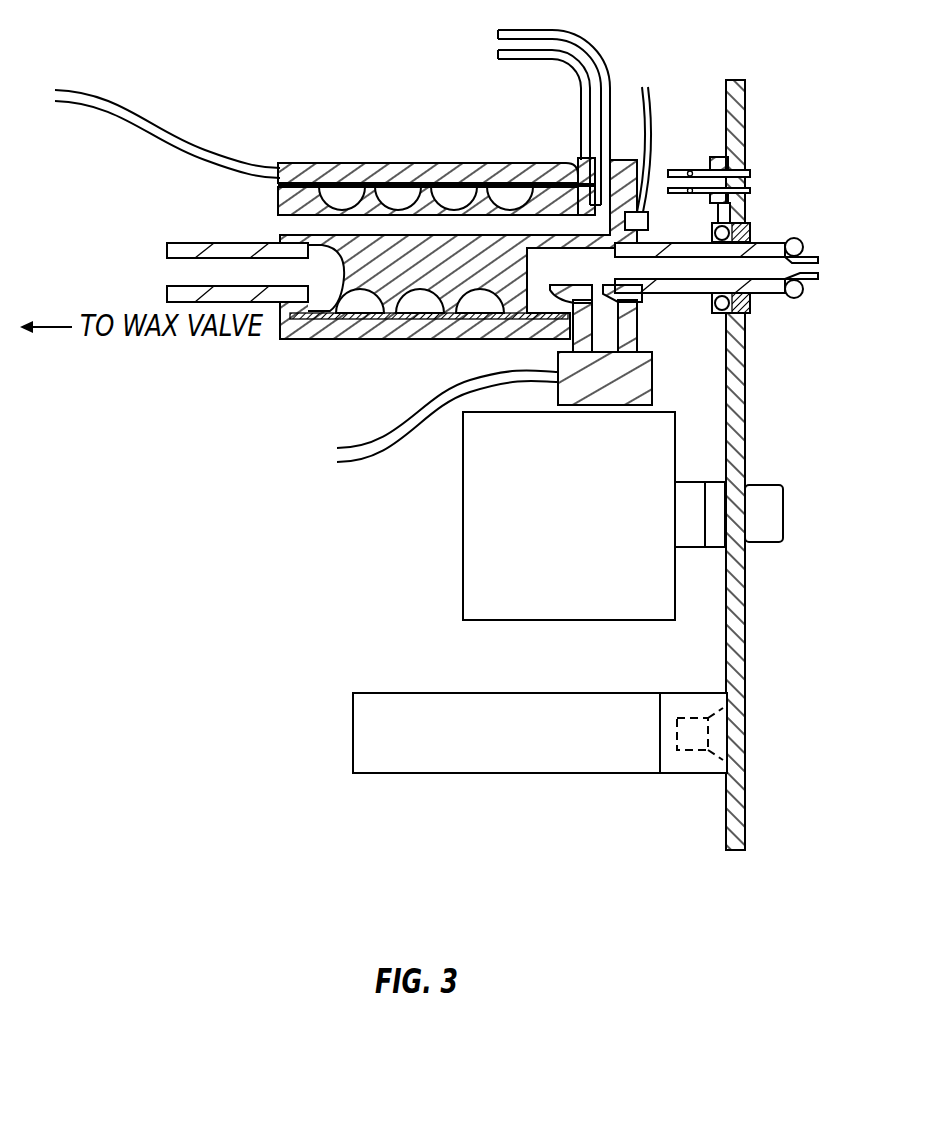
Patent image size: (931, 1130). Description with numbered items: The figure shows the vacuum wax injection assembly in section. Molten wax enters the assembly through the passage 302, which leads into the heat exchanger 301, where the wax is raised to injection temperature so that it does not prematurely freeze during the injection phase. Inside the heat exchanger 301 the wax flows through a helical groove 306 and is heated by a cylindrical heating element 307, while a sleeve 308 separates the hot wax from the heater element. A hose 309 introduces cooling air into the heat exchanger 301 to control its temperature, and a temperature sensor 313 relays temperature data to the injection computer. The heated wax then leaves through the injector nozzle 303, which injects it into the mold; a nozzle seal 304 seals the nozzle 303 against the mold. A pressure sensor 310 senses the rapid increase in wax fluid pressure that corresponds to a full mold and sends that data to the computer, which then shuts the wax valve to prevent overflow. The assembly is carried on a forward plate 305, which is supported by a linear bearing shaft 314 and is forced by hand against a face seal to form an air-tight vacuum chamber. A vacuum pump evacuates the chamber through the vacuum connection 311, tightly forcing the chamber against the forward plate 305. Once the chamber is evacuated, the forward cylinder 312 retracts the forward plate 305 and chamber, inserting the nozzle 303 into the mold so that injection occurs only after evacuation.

The heat exchanger 301 is at (395, 187).
The passage 302 is at (177, 277).
The injector nozzle 303 is at (742, 267).
The nozzle seal 304 is at (829, 244).
The forward plate 305 is at (772, 465).
The helical groove 306 is at (342, 196).
The cylindrical heating element 307 is at (540, 163).
The sleeve 308 is at (438, 182).
The hose 309 is at (478, 45).
The pressure sensor 310 is at (558, 362).
The vacuum connection 311 is at (727, 123).
The forward cylinder 312 is at (597, 534).
The temperature sensor 313 is at (672, 127).
The linear bearing shaft 314 is at (523, 751).